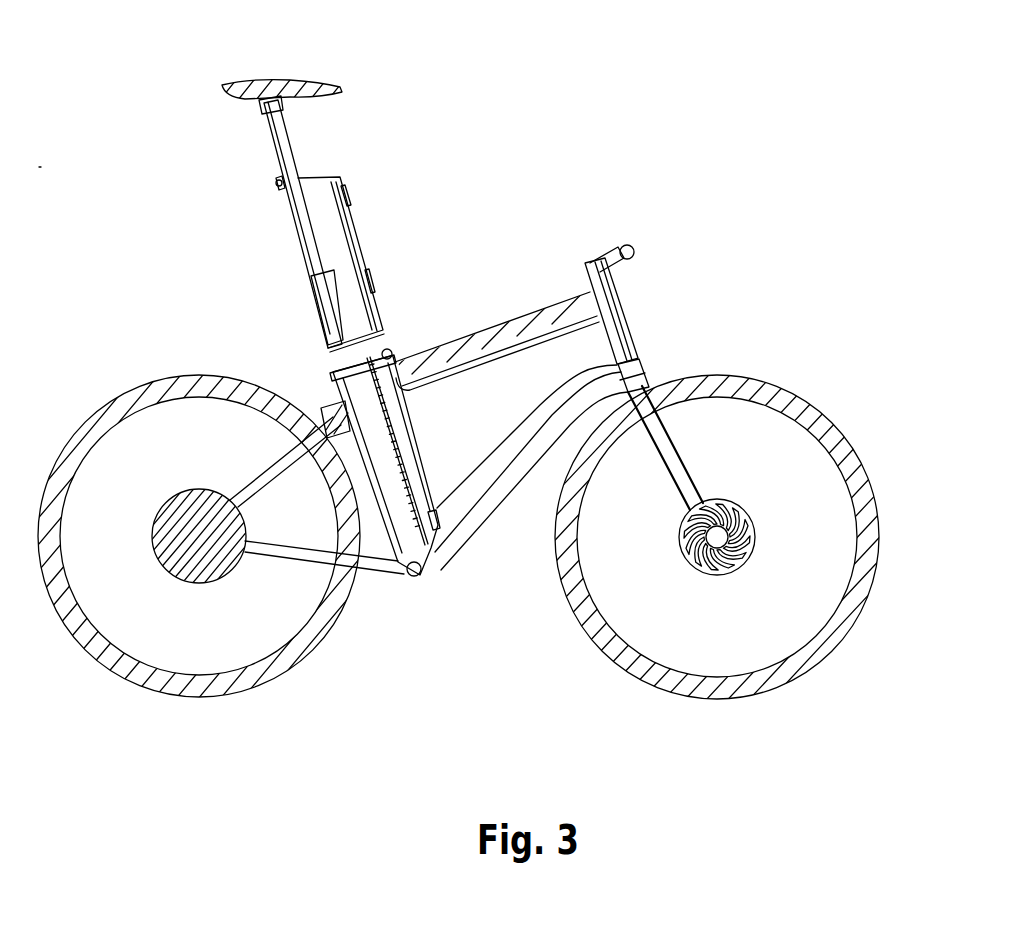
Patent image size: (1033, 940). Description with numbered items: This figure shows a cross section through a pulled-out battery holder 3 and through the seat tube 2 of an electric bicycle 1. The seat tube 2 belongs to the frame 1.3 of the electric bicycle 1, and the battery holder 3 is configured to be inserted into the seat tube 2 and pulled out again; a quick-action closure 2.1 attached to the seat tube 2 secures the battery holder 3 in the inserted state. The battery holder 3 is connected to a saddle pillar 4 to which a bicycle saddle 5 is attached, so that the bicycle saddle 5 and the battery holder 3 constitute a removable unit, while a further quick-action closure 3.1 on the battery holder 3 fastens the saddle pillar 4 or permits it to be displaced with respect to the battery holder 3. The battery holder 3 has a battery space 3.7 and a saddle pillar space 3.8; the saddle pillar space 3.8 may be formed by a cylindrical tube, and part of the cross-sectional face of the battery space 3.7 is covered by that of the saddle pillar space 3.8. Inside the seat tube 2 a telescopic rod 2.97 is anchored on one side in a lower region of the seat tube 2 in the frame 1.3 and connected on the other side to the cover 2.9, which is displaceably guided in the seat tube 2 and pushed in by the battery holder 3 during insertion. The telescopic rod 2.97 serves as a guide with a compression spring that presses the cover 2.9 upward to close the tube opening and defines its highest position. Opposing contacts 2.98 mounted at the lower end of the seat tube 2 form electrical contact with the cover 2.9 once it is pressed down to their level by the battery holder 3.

The electric bicycle 1 is at (600, 202).
The frame 1.3 is at (507, 340).
The seat tube 2 is at (297, 403).
The quick-action closure 2.1 is at (398, 362).
The cover 2.9 is at (387, 356).
The telescopic rod 2.97 is at (408, 442).
The opposing contacts 2.98 is at (435, 562).
The battery holder 3 is at (358, 245).
The quick-action closure 3.1 is at (275, 180).
The battery space 3.7 is at (348, 278).
The saddle pillar space 3.8 is at (327, 317).
The saddle pillar 4 is at (270, 137).
The bicycle saddle 5 is at (257, 79).